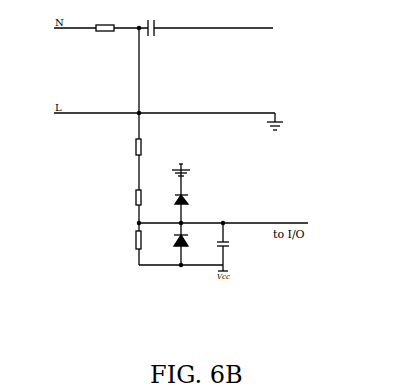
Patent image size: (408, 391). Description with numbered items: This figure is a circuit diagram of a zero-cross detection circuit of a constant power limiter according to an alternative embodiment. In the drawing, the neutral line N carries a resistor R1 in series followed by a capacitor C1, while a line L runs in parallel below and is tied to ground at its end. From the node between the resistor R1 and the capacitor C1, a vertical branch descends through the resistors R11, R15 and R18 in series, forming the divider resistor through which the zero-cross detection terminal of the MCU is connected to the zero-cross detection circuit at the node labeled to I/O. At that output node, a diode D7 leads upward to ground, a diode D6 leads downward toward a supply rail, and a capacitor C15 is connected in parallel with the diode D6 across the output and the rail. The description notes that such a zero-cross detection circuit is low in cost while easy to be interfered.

The resistor R1 is at (105, 20).
The capacitor C1 is at (153, 21).
The resistor R11 is at (150, 147).
The resistor R15 is at (150, 197).
The resistor R18 is at (127, 240).
The diode D7 is at (189, 193).
The diode D6 is at (174, 244).
The capacitor C15 is at (235, 244).